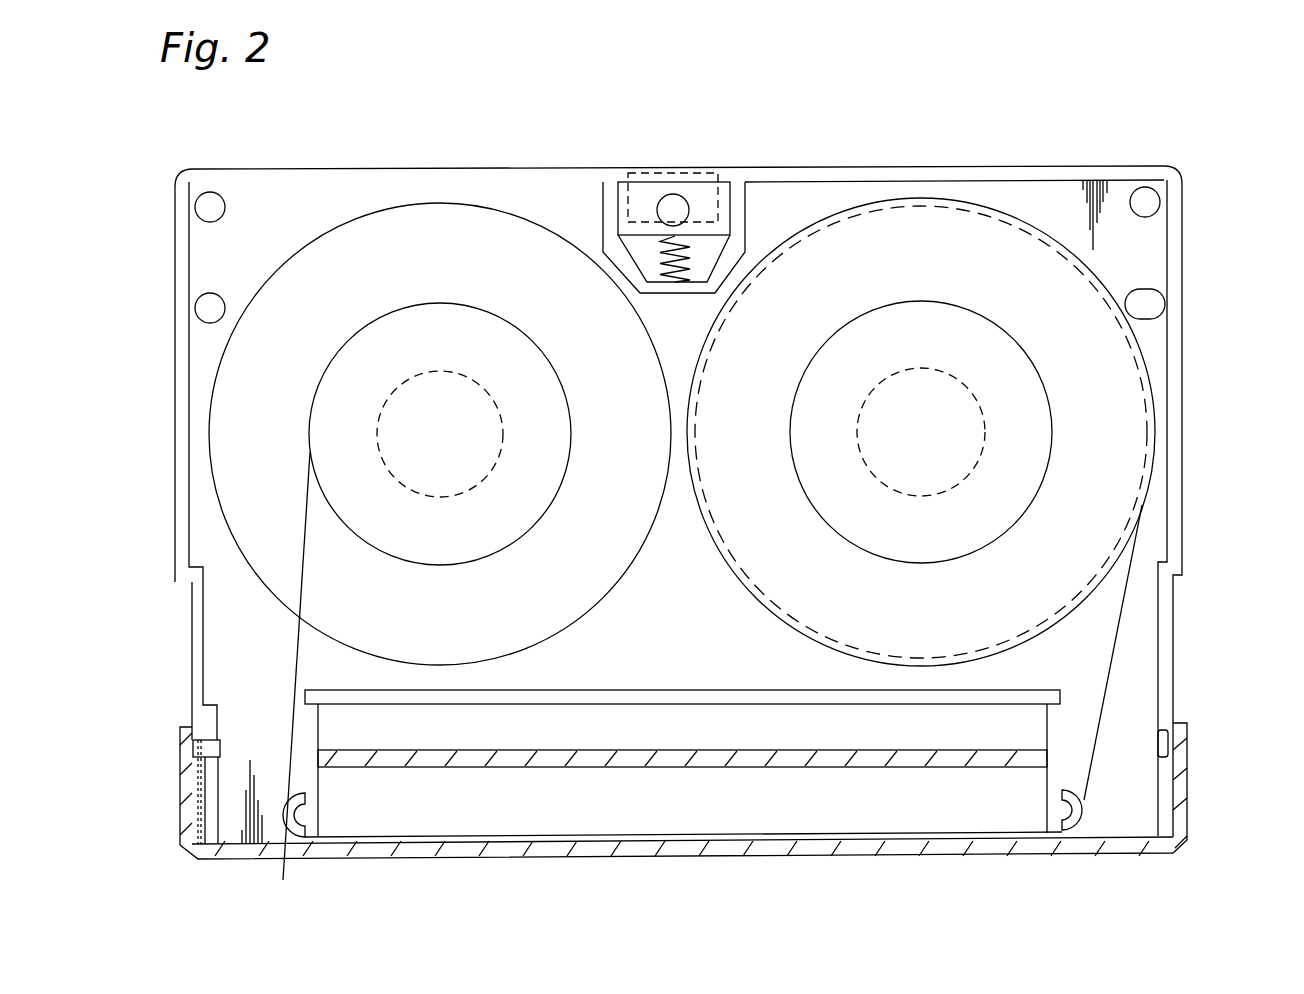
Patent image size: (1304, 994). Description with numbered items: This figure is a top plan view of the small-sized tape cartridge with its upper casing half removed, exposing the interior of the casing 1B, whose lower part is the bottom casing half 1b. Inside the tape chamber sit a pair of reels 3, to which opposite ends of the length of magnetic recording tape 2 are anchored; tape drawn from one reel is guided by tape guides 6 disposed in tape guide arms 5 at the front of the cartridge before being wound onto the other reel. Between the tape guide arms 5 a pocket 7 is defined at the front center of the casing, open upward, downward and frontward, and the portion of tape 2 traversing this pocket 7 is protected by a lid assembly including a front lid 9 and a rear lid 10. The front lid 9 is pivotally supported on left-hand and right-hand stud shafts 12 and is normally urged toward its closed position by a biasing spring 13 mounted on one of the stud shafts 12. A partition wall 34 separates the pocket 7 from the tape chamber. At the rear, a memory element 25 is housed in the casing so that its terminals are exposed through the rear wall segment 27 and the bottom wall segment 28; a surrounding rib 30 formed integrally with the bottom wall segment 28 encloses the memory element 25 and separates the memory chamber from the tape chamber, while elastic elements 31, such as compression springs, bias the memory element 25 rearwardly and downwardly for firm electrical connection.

The reel 3 is at (348, 200).
The rear wall segment 27 is at (512, 178).
The memory element 25 is at (640, 192).
The elastic element 31 is at (688, 197).
The surrounding rib 30 is at (745, 213).
The bottom wall segment 28 is at (842, 190).
The casing 1B is at (1183, 245).
The bottom casing half 1b is at (1183, 375).
The magnetic recording tape 2 is at (293, 652).
The partition wall 34 is at (692, 688).
The stud shaft 12 is at (222, 745).
The rear lid 10 is at (712, 748).
The biasing spring 13 is at (197, 794).
The tape guide arm 5 is at (237, 835).
The tape guide 6 is at (1090, 882).
The pocket 7 is at (603, 720).
The front lid 9 is at (688, 857).